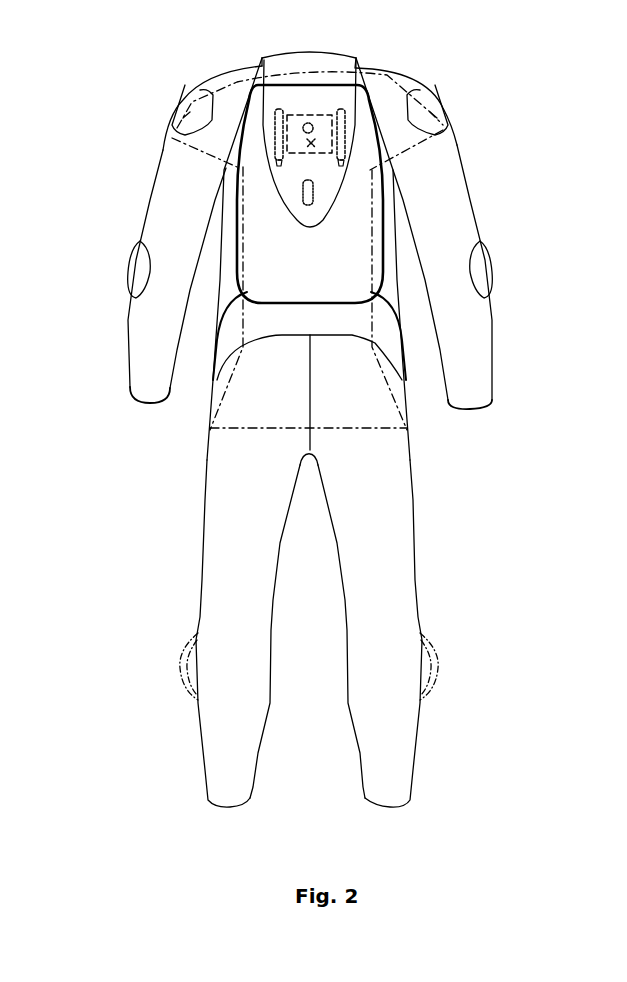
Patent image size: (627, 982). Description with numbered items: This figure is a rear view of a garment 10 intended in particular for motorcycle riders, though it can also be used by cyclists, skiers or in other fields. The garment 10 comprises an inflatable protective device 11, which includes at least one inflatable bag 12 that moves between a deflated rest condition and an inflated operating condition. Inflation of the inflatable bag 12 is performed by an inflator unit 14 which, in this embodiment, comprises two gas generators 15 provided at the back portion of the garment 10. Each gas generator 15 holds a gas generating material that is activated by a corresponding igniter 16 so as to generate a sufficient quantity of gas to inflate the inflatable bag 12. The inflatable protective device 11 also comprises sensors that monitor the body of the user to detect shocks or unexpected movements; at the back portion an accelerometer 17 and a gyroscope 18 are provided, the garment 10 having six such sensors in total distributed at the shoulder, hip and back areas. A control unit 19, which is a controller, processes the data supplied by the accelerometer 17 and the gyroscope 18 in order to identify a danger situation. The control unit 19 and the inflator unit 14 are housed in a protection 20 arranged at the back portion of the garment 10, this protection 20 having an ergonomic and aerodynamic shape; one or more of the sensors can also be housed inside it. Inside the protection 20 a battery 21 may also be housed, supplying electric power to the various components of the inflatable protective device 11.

The garment 10 is at (143, 100).
The inflatable protective device 11 is at (463, 118).
The inflatable bag 12 is at (257, 380).
The inflator unit 14 is at (353, 126).
The gas generator 15 is at (274, 113).
The igniter 16 is at (278, 163).
The accelerometer 17 is at (308, 123).
The gyroscope 18 is at (312, 148).
The control unit 19 is at (300, 158).
The protection 20 is at (308, 226).
The battery 21 is at (310, 198).